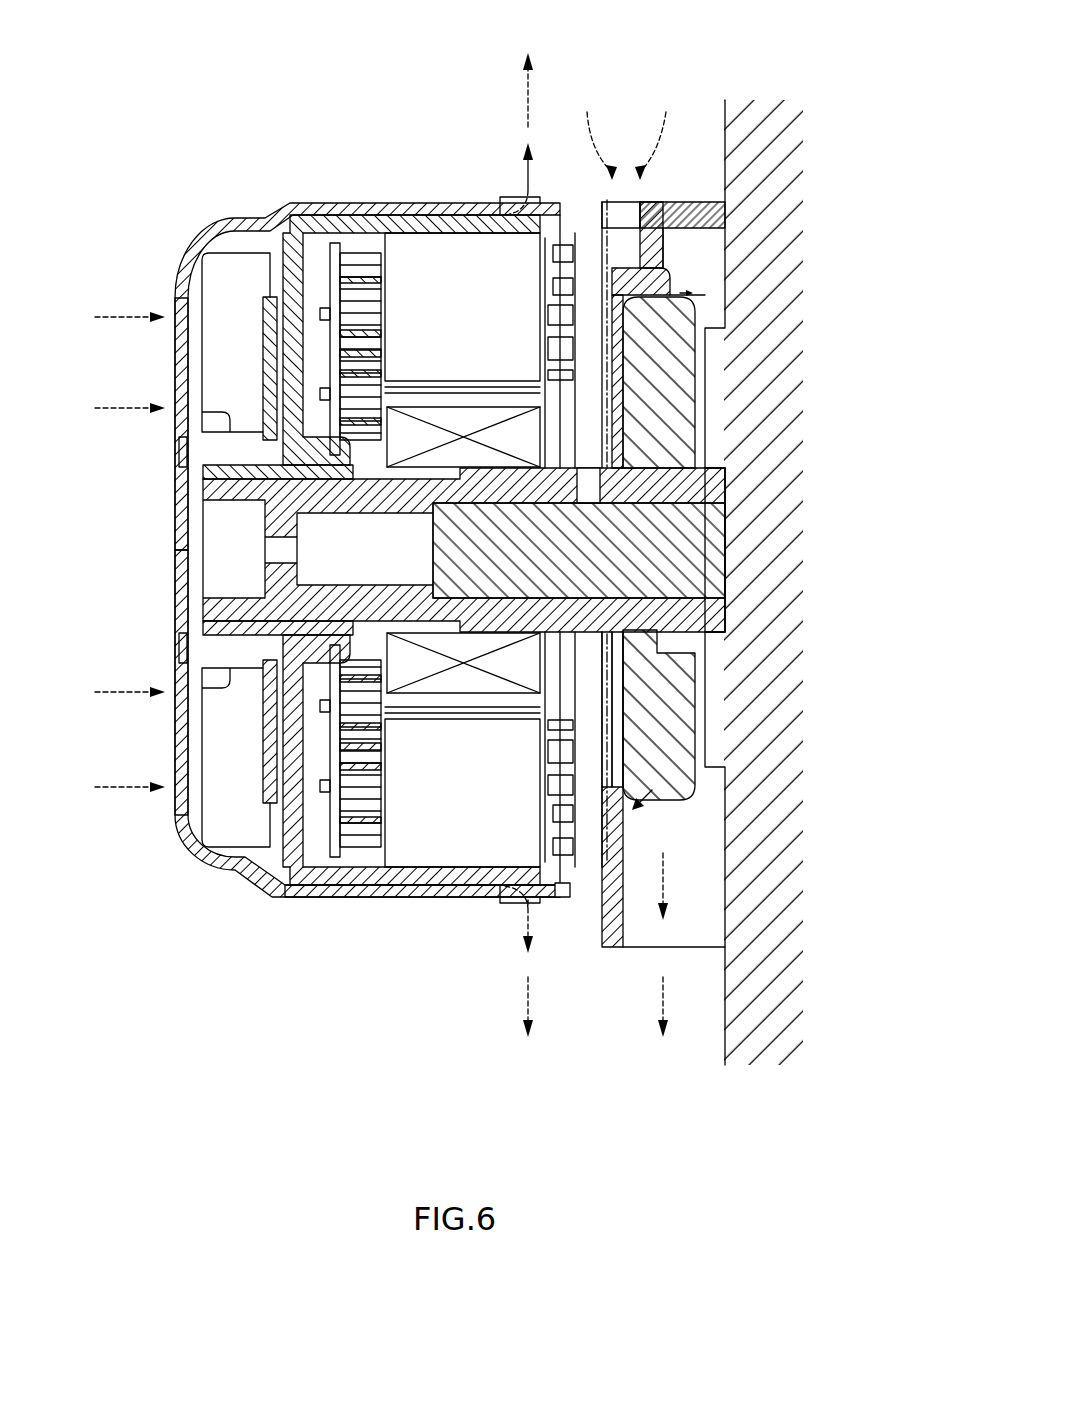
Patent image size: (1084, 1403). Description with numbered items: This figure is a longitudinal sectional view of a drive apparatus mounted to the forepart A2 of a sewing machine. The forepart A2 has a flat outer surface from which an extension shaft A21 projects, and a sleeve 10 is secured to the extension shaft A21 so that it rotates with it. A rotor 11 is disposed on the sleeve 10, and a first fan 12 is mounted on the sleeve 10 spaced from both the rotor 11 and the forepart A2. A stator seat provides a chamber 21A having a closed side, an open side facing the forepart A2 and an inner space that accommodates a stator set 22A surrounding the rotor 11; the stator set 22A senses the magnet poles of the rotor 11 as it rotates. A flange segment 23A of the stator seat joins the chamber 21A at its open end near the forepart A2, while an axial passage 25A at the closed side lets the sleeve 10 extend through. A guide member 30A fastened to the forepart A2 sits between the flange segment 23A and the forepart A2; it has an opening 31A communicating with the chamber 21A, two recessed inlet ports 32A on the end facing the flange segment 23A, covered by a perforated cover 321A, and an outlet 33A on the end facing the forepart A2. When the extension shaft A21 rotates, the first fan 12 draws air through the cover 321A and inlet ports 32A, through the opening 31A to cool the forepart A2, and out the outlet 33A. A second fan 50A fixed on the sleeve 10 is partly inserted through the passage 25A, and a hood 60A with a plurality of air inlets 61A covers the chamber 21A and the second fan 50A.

The sleeve 10 is at (690, 490).
The rotor 11 is at (520, 433).
The first fan 12 is at (640, 380).
The chamber 21A is at (372, 215).
The stator set 22A is at (400, 888).
The flange segment 23A is at (568, 203).
The axial passage 25A is at (197, 437).
The guide member 30A is at (680, 200).
The opening 31A is at (617, 333).
The inlet ports 32A is at (633, 250).
The cover 321A is at (630, 200).
The outlet 33A is at (647, 945).
The second fan 50A is at (217, 365).
The hood 60A is at (265, 210).
The air inlets 61A is at (173, 307).
The forepart A2 is at (772, 187).
The extension shaft A21 is at (728, 562).